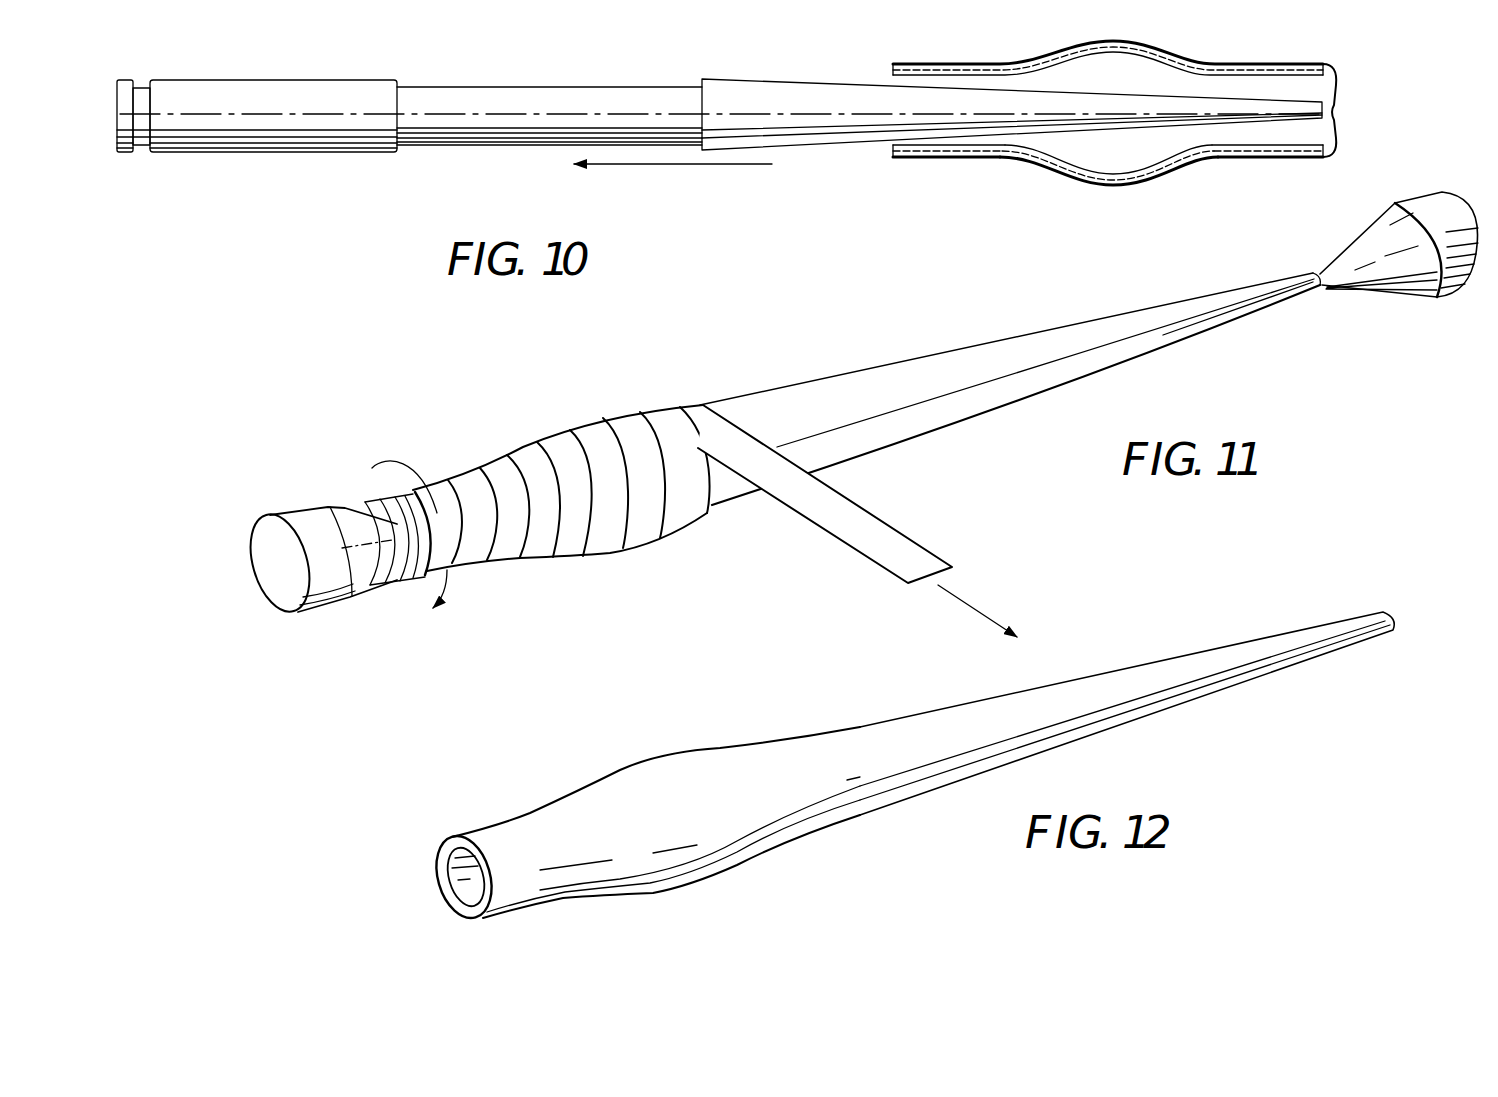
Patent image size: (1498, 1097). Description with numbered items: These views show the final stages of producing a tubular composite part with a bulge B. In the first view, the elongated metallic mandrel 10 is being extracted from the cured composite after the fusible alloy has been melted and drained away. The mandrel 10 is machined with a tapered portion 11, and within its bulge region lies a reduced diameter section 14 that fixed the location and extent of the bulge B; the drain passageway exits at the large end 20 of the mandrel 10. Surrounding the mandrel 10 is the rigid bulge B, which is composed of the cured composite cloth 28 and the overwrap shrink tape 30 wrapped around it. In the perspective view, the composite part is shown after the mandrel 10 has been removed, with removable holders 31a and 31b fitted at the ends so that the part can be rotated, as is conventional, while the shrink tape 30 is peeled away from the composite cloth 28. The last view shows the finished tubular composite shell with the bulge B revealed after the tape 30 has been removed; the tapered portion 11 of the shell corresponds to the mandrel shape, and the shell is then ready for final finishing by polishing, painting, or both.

In FIG. 10, the mandrel 10 is at (318, 152).
In FIG. 11, the mandrel 10 is at (598, 568).
In FIG. 12, the mandrel 10 is at (518, 807).
In FIG. 11, the tapered portion 11 is at (1153, 333).
In FIG. 12, the tapered portion 11 is at (1250, 652).
In FIG. 10, the reduced diameter section 14 is at (587, 93).
In FIG. 10, the large end 20 is at (125, 152).
In FIG. 10, the composite cloth 28 is at (963, 158).
In FIG. 11, the composite cloth 28 is at (738, 413).
In FIG. 12, the composite cloth 28 is at (720, 860).
In FIG. 10, the overwrap shrink tape 30 is at (1065, 165).
In FIG. 11, the overwrap shrink tape 30 is at (867, 523).
In FIG. 11, the removable holder 31a is at (1445, 298).
In FIG. 11, the removable holder 31b is at (341, 606).
In FIG. 10, the bulge B is at (1158, 187).
In FIG. 12, the bulge B is at (662, 760).